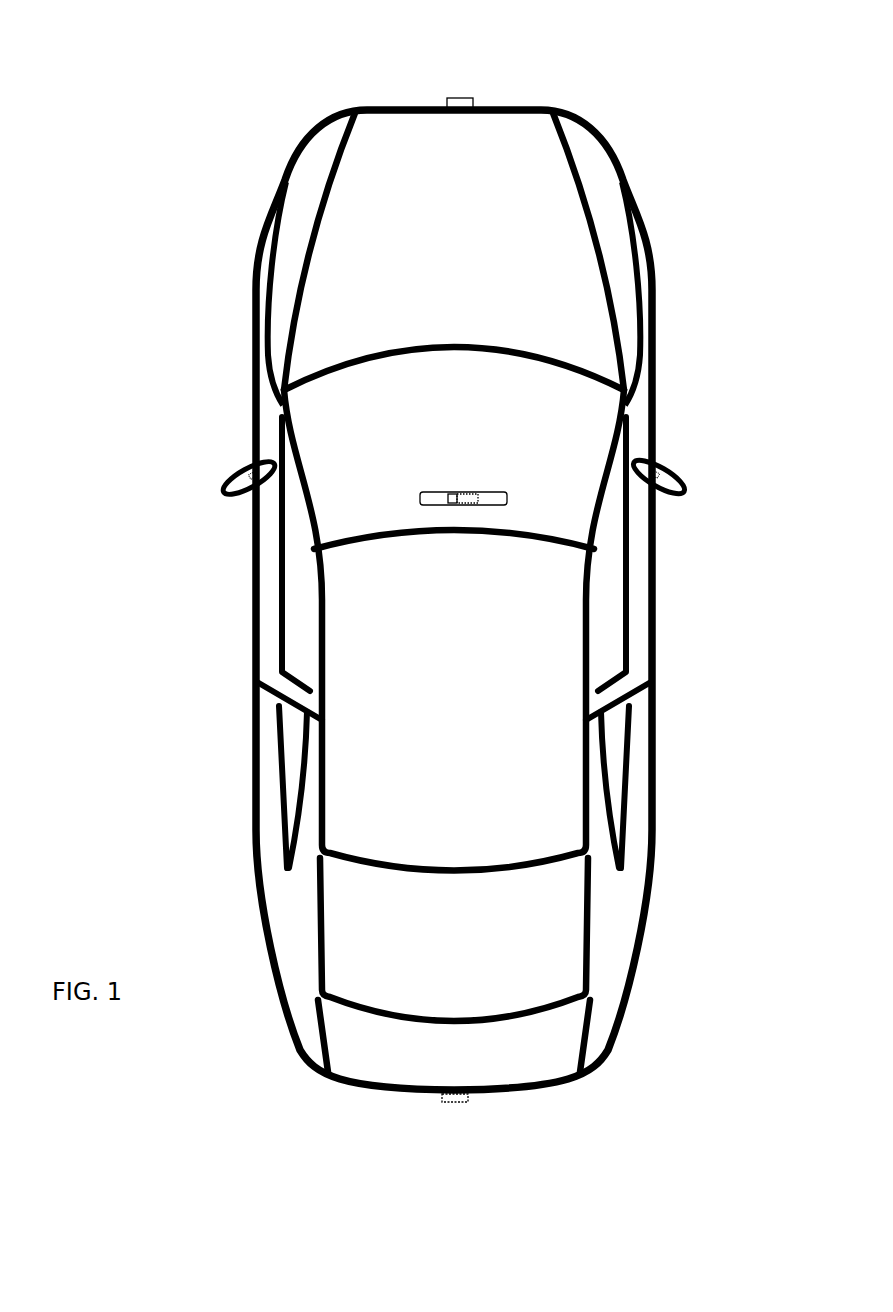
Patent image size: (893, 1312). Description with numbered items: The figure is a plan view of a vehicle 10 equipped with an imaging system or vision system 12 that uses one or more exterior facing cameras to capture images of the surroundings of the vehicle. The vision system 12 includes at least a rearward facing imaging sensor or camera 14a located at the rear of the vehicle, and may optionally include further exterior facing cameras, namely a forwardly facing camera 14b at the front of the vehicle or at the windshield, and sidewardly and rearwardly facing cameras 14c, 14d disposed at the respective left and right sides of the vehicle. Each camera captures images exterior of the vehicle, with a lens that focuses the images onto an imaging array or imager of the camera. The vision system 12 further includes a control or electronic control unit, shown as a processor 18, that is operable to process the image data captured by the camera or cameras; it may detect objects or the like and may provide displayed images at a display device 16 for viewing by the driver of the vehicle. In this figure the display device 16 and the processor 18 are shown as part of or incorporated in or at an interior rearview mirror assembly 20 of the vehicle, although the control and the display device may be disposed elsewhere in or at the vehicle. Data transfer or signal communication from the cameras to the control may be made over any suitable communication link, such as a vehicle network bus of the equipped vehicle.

The vehicle 10 is at (198, 185).
The vision system 12 is at (405, 1122).
The rearward facing camera 14a is at (457, 1098).
The forwardly facing camera 14b is at (463, 99).
The sidewardly/rearwardly facing camera 14c is at (240, 467).
The sidewardly/rearwardly facing camera 14d is at (667, 470).
The display device 16 is at (435, 493).
The processor 18 is at (460, 493).
The interior rearview mirror assembly 20 is at (507, 493).